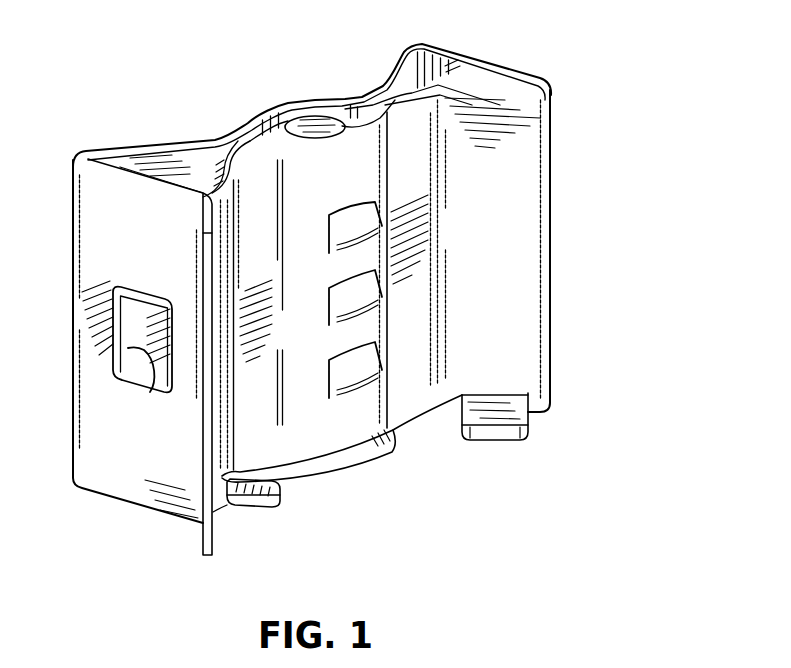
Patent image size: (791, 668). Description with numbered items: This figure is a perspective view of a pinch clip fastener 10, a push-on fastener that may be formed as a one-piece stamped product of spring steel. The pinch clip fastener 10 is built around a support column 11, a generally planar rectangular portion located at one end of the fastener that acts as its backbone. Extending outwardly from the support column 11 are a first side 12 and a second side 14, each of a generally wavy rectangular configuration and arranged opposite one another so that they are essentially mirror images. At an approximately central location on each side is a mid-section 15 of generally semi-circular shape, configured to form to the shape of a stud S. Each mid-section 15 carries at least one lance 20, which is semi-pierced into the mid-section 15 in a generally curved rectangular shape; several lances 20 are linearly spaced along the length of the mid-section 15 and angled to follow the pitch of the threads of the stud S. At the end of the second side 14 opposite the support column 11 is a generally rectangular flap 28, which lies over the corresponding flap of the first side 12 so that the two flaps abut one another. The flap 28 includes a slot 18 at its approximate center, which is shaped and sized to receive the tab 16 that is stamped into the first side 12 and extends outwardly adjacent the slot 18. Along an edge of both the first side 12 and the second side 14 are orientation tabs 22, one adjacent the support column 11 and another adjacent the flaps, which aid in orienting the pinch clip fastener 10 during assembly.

The pinch clip fastener 10 is at (586, 68).
The support column 11 is at (450, 85).
The first side 12 is at (478, 239).
The second side 14 is at (188, 170).
The mid-section 15 is at (333, 108).
The stud S is at (308, 127).
The tab 16 is at (162, 320).
The slot 18 is at (150, 392).
The lance 20 is at (345, 368).
The orientation tab 22 is at (255, 490).
The flap 28 is at (130, 463).